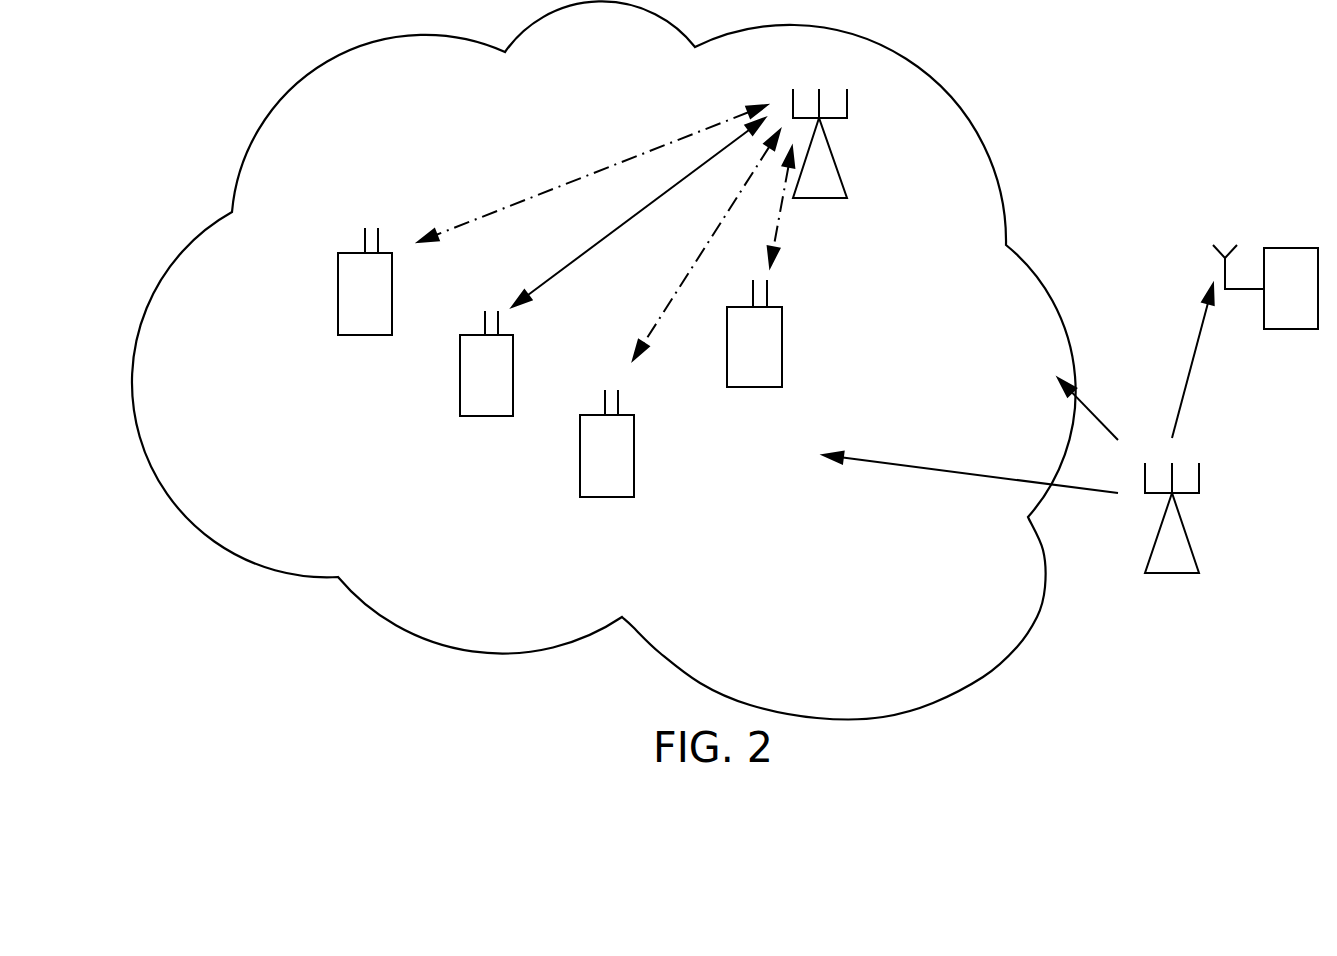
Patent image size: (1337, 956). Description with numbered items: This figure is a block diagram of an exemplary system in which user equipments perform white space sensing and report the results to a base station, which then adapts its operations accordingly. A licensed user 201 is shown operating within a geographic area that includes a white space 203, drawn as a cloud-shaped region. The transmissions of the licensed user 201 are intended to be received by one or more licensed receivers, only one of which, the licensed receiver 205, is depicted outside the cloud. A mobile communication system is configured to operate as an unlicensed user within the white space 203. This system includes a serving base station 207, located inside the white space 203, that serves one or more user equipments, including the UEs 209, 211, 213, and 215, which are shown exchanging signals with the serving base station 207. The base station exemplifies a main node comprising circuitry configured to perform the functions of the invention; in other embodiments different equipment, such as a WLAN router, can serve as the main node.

The licensed user 201 is at (1149, 563).
The white space 203 is at (1202, 181).
The licensed receiver 205 is at (1288, 329).
The serving base station 207 is at (835, 198).
The UE 209 is at (393, 308).
The UE 211 is at (460, 392).
The UE 213 is at (580, 488).
The UE 215 is at (727, 381).